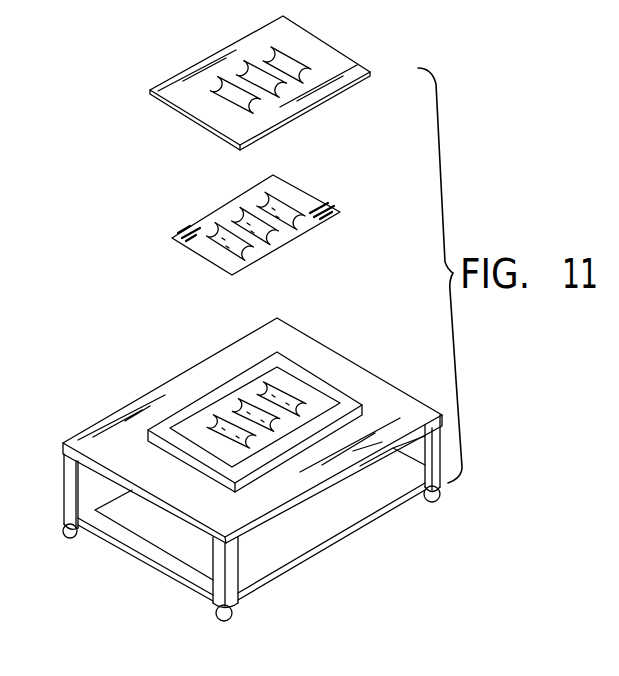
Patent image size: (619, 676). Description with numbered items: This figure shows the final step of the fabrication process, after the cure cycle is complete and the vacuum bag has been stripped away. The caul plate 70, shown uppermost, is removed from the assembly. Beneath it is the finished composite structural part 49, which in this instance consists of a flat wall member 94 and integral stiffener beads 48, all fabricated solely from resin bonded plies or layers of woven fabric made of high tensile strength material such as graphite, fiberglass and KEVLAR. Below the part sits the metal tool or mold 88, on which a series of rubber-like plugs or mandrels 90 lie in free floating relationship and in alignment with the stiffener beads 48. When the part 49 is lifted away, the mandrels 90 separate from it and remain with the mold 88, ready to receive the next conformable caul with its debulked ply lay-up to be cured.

The caul plate 70 is at (328, 54).
The flat wall member 94 is at (278, 180).
The composite structural part 49 is at (315, 185).
The stiffener beads 48 is at (312, 231).
The mandrels 90 is at (262, 385).
The mold 88 is at (337, 392).